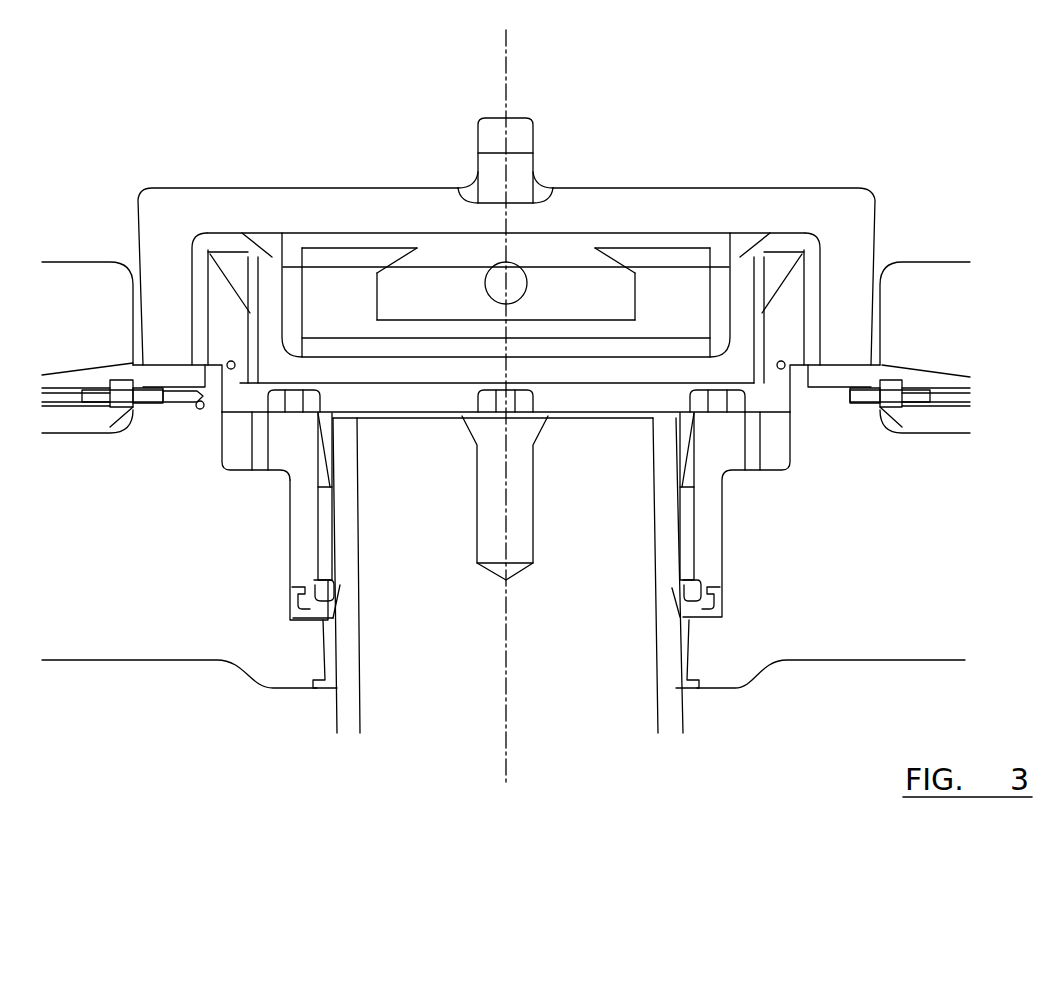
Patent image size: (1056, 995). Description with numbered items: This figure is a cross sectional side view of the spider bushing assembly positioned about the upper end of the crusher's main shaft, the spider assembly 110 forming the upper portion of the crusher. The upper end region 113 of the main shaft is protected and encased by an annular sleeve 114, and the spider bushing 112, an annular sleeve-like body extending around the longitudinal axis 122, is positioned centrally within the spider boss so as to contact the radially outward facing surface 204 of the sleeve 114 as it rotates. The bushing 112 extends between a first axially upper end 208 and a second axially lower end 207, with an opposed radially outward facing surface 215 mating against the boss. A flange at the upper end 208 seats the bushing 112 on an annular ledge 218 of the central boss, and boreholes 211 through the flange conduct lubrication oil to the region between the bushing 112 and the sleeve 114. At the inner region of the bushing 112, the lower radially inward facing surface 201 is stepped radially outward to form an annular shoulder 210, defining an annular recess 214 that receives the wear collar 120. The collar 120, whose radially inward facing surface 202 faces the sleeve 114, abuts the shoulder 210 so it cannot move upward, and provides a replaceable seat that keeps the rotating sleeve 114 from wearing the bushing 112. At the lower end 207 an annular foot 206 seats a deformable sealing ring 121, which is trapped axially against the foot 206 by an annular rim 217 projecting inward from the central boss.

The spider assembly 110 is at (955, 576).
The spider bushing 112 is at (708, 530).
The upper end region of main shaft 113 is at (588, 687).
The annular sleeve 114 is at (347, 707).
The wear collar 120 is at (687, 555).
The sealing ring 121 is at (703, 617).
The longitudinal axis 122 is at (506, 72).
The radially inward facing surface 201 is at (322, 510).
The radially inward facing surface of collar 202 is at (337, 532).
The radially outward facing surface of sleeve 204 is at (325, 465).
The annular foot 206 is at (305, 596).
The second axially lower end 207 is at (729, 582).
The first axially upper end 208 is at (676, 401).
The annular shoulder 210 is at (683, 488).
The boreholes 211 is at (258, 441).
The annular recess 214 is at (324, 560).
The radially outward facing surface of bushing 215 is at (287, 562).
The annular rim 217 is at (293, 652).
The annular ledge 218 is at (252, 482).